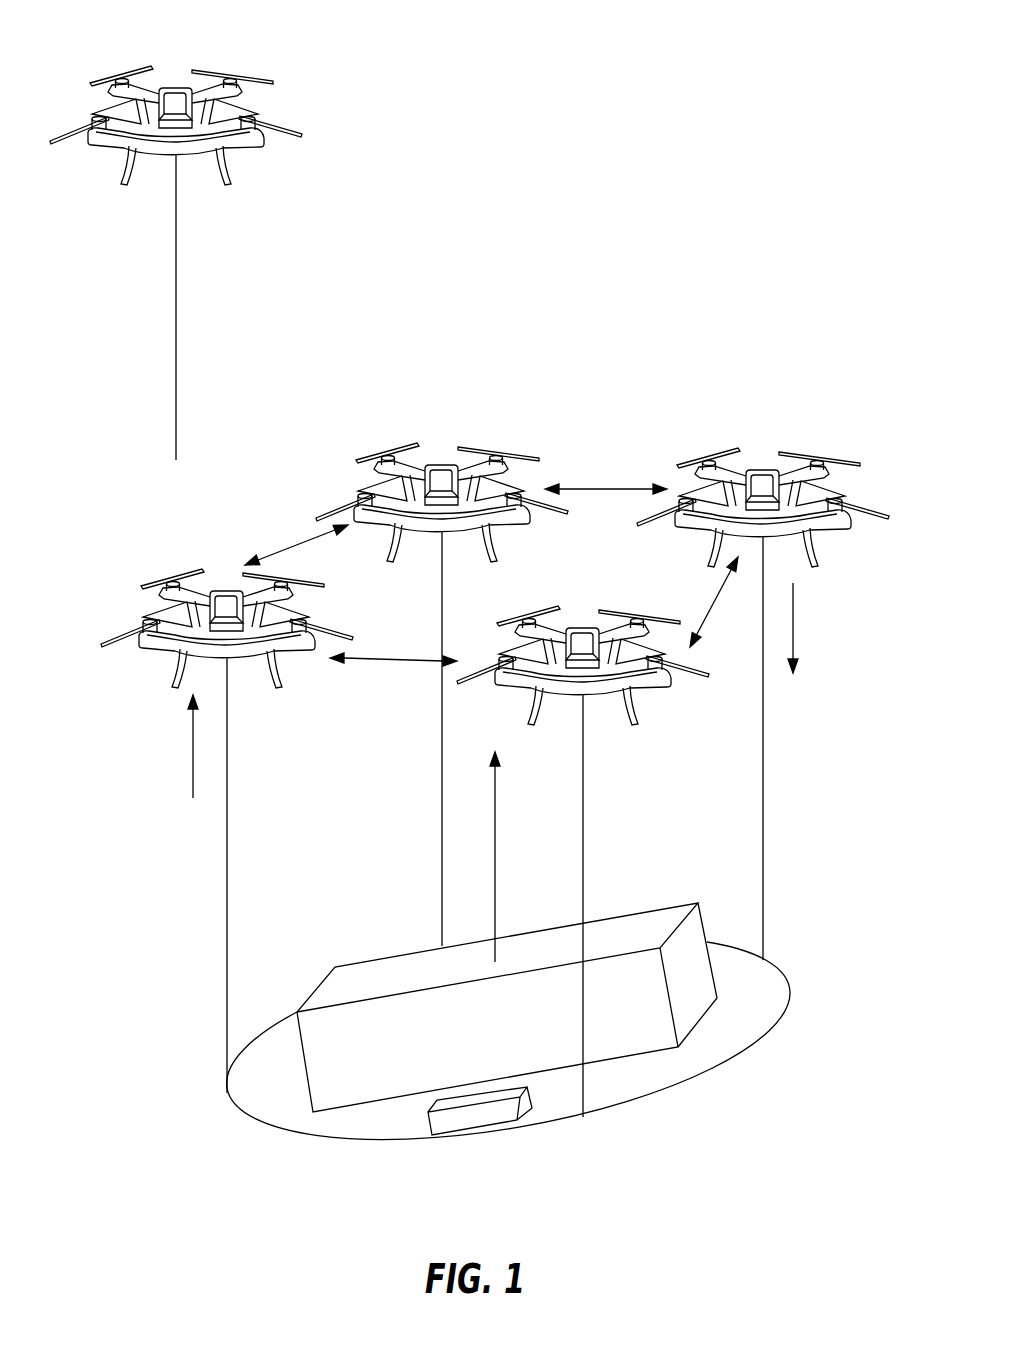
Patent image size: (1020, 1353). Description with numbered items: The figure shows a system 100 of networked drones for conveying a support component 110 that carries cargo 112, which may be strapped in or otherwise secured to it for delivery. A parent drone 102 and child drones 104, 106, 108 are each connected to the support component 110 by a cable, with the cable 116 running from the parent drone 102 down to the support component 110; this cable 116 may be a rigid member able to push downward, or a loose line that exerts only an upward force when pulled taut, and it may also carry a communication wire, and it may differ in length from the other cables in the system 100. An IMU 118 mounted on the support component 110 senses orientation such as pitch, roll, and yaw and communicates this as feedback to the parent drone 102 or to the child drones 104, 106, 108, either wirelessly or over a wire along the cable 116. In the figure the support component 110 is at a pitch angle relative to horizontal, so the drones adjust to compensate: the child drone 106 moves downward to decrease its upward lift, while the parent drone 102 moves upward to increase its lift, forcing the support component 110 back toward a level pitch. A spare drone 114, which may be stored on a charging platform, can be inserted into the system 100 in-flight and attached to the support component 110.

The system 100 is at (788, 37).
The parent drone 102 is at (175, 578).
The child drone 104 is at (387, 458).
The child drone 106 is at (780, 452).
The child drone 108 is at (620, 613).
The support component 110 is at (700, 1077).
The cargo 112 is at (377, 958).
The spare drone 114 is at (302, 133).
The cable 116 is at (227, 860).
The IMU 118 is at (478, 1128).